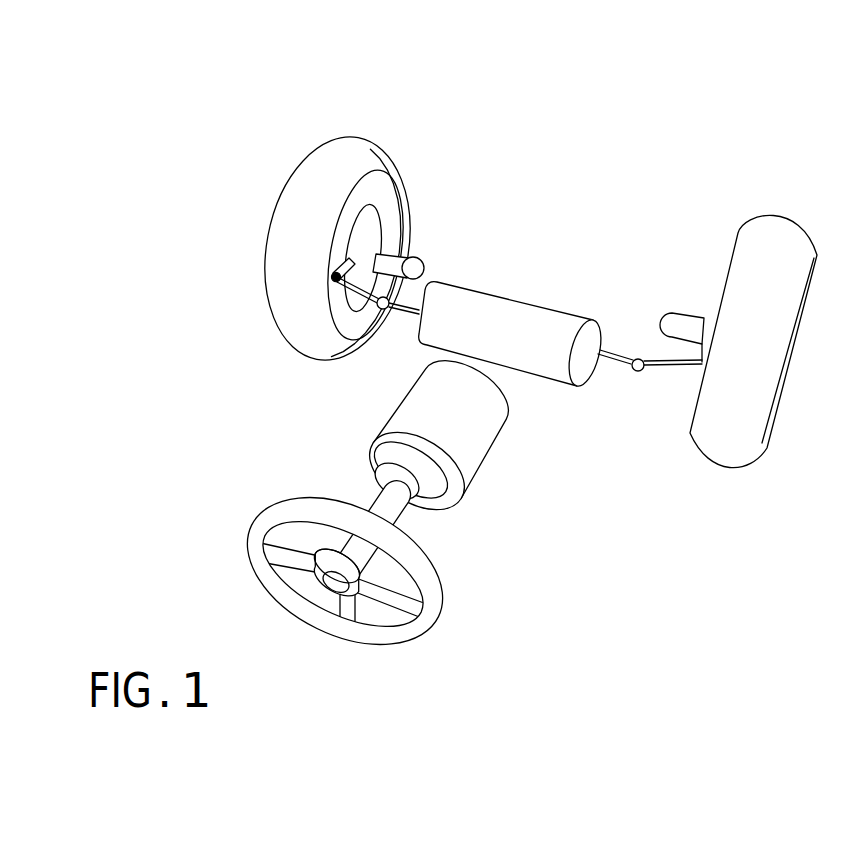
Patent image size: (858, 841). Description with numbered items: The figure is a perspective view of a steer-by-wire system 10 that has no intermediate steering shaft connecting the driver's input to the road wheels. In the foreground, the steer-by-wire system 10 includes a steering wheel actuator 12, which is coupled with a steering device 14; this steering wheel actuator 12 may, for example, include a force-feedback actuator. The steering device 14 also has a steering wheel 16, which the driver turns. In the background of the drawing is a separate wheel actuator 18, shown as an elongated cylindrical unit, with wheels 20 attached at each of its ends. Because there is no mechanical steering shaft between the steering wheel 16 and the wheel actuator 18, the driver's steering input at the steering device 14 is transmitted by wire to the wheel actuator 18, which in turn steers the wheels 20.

The steer-by-wire system 10 is at (244, 155).
The steering wheel actuator 12 is at (464, 435).
The steering device 14 is at (258, 460).
The steering wheel 16 is at (255, 545).
The wheel actuator 18 is at (512, 318).
The wheels 20 is at (343, 160).